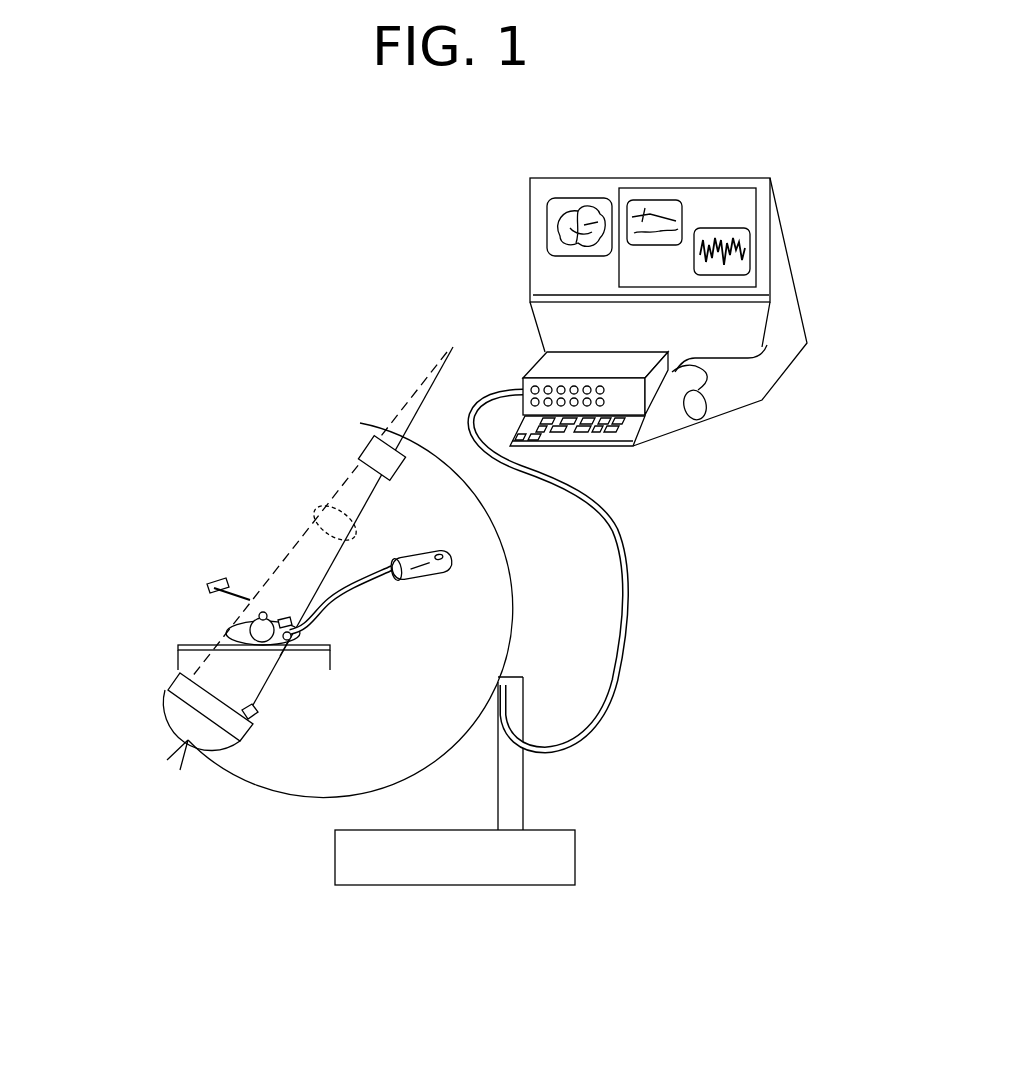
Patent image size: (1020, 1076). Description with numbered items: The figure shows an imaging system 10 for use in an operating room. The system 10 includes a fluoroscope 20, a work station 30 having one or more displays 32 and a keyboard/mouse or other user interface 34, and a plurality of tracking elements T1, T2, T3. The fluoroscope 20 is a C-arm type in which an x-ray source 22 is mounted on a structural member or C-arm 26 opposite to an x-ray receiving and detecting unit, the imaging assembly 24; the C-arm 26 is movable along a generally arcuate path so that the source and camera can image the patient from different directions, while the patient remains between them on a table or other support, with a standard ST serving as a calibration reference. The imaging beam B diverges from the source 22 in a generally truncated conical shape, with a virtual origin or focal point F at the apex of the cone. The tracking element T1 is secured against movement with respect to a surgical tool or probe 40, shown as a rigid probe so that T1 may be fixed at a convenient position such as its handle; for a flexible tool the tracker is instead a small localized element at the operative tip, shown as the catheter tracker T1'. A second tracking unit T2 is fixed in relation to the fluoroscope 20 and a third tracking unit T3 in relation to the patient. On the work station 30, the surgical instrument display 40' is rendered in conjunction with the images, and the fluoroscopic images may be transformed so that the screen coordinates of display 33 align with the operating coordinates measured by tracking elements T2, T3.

The imaging system 10 is at (172, 519).
The fluoroscope 20 is at (522, 643).
The x-ray source 22 is at (365, 445).
The imaging assembly 24 is at (156, 720).
The C-arm 26 is at (510, 612).
The work station 30 is at (750, 388).
The display 32 is at (545, 228).
The display 33 is at (665, 282).
The user interface 34 is at (630, 418).
The surgical tool or probe 40 is at (216, 575).
The surgical instrument display 40' is at (688, 204).
The focal point F is at (453, 347).
The imaging beam B is at (313, 511).
The standard ST is at (172, 679).
The tracking element T1 is at (224, 558).
The catheter tracker T1' is at (305, 672).
The tracking unit T2 is at (258, 720).
The tracking unit T3 is at (290, 614).